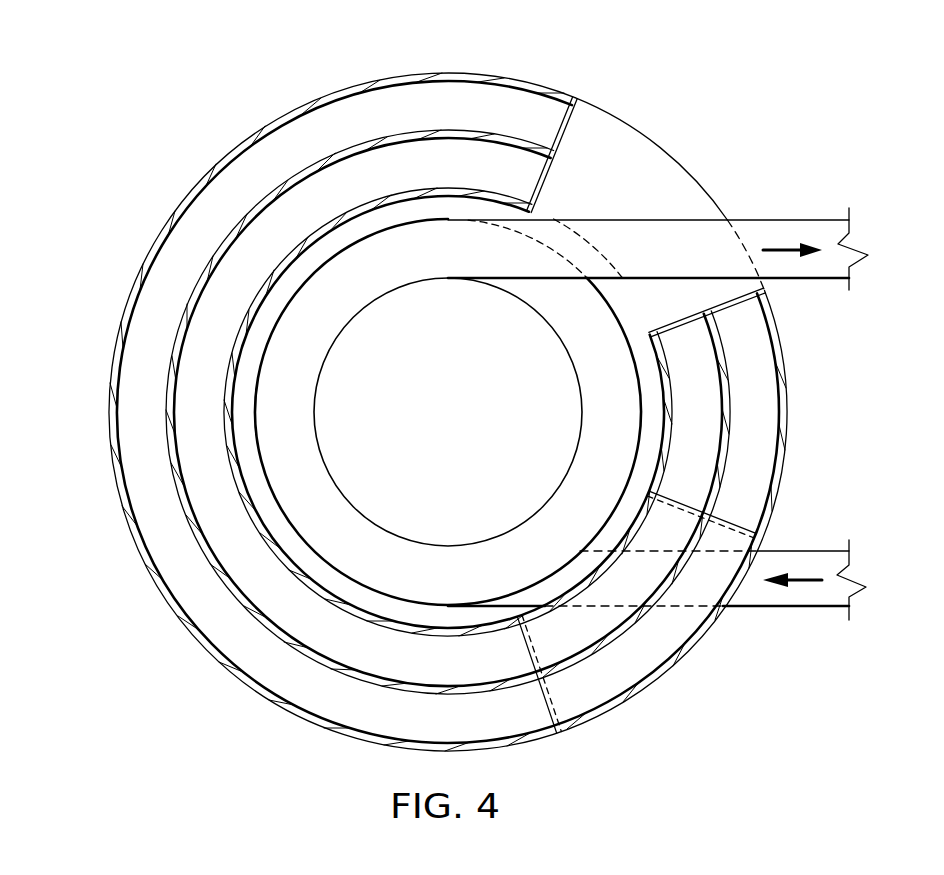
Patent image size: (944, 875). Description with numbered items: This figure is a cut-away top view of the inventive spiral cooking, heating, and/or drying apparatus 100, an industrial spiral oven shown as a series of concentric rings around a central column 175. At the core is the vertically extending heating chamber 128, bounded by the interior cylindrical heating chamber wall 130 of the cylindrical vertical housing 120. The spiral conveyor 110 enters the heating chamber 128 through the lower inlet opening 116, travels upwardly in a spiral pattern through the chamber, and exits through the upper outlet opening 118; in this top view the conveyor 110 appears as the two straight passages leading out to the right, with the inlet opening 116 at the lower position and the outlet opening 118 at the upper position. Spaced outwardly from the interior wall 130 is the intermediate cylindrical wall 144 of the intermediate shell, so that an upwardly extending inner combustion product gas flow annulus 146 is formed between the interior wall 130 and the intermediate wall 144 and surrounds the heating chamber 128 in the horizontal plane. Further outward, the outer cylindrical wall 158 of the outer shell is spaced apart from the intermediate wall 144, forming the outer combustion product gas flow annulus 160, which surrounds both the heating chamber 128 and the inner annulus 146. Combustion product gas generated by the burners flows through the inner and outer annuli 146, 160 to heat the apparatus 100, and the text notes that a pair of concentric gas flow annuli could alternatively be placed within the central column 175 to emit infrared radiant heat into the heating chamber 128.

The spiral cooking, heating, and/or drying apparatus 100 is at (172, 78).
The spiral conveyor 110 is at (821, 279).
The lower inlet opening 116 is at (672, 652).
The upper outlet opening 118 is at (668, 183).
The cylindrical vertical housing 120 is at (330, 92).
The heating chamber 128 is at (303, 416).
The interior cylindrical heating chamber wall 130 is at (232, 384).
The intermediate cylindrical wall 144 is at (170, 452).
The inner combustion product gas flow annulus 146 is at (203, 508).
The outer cylindrical wall 158 is at (213, 168).
The outer combustion product gas flow annulus 160 is at (217, 643).
The central column 175 is at (468, 430).